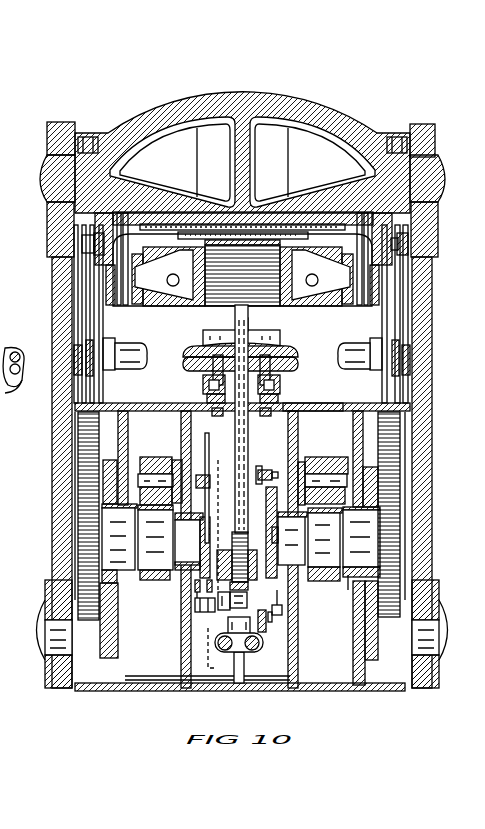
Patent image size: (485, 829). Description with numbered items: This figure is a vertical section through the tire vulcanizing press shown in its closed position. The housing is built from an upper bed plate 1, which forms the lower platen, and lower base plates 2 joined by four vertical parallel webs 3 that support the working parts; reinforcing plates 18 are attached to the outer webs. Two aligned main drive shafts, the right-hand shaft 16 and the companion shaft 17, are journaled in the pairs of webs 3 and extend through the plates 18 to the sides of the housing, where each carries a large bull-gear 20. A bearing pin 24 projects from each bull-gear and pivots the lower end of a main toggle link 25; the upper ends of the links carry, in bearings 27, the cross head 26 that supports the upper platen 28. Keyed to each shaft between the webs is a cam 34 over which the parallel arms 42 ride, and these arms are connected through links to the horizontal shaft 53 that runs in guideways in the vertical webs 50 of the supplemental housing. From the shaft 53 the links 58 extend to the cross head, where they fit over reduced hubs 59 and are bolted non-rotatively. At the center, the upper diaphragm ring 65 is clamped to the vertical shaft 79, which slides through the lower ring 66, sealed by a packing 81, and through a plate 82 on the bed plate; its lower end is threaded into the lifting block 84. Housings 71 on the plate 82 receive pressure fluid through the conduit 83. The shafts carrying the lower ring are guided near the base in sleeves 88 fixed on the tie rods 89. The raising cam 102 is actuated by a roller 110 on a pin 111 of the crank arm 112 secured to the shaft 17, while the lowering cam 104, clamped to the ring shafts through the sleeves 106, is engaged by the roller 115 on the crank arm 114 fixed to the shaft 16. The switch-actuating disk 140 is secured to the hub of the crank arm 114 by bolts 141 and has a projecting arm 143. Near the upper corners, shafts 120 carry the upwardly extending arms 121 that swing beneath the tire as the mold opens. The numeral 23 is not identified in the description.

The upper bed plate 1 is at (116, 403).
The lower base plates 2 is at (150, 690).
The vertical parallel webs 3 is at (128, 430).
The main drive shaft 16 is at (348, 580).
The companion main drive shaft 17 is at (209, 462).
The reinforcing plates 18 is at (108, 660).
The bull-gear 20 is at (85, 540).
The gear rack 23 is at (78, 490).
The bearing pin 24 is at (45, 648).
The main toggle link 25 is at (52, 322).
The cross head 26 is at (290, 112).
The bearings 27 is at (46, 215).
The upper platen 28 is at (326, 308).
The cam 34 is at (158, 580).
The parallel arms 42 is at (175, 457).
The vertical webs 50 is at (100, 328).
The horizontal shaft 53 is at (136, 350).
The links 58 is at (88, 136).
The reduced hubs 59 is at (98, 136).
The upper diaphragm supporting ring 65 is at (287, 345).
The lower diaphragm supporting ring 66 is at (298, 363).
The housings 71 is at (203, 385).
The vertical shaft 79 is at (250, 445).
The packing 81 is at (295, 348).
The plate 82 is at (206, 396).
The conduit 83 is at (300, 410).
The block 84 is at (256, 560).
The sleeves 88 is at (260, 645).
The tie rods 89 is at (252, 650).
The raising cam 102 is at (227, 520).
The lowering cam 104 is at (268, 622).
The sleeves 106 is at (262, 605).
The roller 110 is at (218, 610).
The pin 111 is at (200, 600).
The crank arm 112 is at (193, 527).
The crank arm 114 is at (275, 470).
The roller 115 is at (260, 469).
The parallel shafts 120 is at (12, 412).
The upwardly extending arms 121 is at (10, 385).
The disk 140 is at (285, 598).
The bolts 141 is at (262, 532).
The projecting arm 143 is at (272, 620).